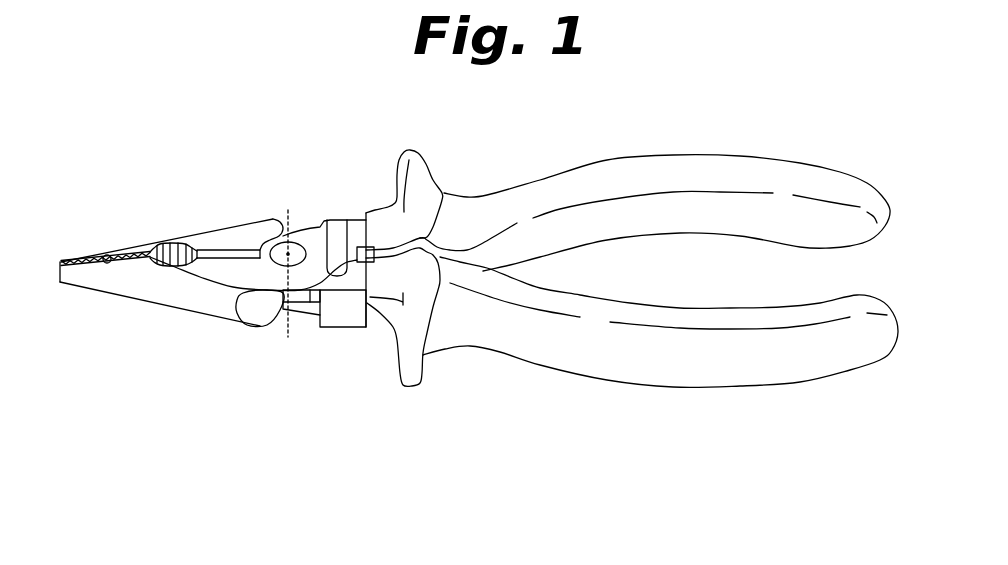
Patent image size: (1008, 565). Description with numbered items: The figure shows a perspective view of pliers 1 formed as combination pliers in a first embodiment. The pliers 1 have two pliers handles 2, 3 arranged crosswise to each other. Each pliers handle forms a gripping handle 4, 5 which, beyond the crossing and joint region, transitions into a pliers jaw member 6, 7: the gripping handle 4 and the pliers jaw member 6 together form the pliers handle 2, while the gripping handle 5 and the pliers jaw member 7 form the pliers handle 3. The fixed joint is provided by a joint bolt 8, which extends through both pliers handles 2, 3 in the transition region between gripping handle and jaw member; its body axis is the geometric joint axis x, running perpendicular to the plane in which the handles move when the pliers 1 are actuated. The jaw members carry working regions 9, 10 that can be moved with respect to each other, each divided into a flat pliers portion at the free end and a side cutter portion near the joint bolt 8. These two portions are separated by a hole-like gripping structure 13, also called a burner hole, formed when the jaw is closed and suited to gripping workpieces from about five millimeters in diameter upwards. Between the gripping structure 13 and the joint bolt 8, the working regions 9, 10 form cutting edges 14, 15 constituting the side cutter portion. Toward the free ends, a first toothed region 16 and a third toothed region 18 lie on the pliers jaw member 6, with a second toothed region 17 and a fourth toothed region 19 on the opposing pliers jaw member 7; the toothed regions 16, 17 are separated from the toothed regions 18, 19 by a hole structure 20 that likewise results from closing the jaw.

The pliers 1 is at (600, 114).
The pliers handle 2 is at (787, 365).
The pliers handle 3 is at (785, 175).
The gripping handle 4 is at (733, 373).
The gripping handle 5 is at (728, 165).
The pliers jaw member 6 is at (225, 230).
The pliers jaw member 7 is at (193, 300).
The joint bolt 8 is at (298, 246).
The working region 9 is at (214, 238).
The working region 10 is at (219, 262).
The gripping structure 13 is at (172, 243).
The cutting edge 14 is at (247, 252).
The cutting edge 15 is at (236, 260).
The first toothed region 16 is at (125, 258).
The second toothed region 17 is at (129, 266).
The third toothed region 18 is at (64, 261).
The fourth toothed region 19 is at (85, 271).
The hole structure 20 is at (104, 256).